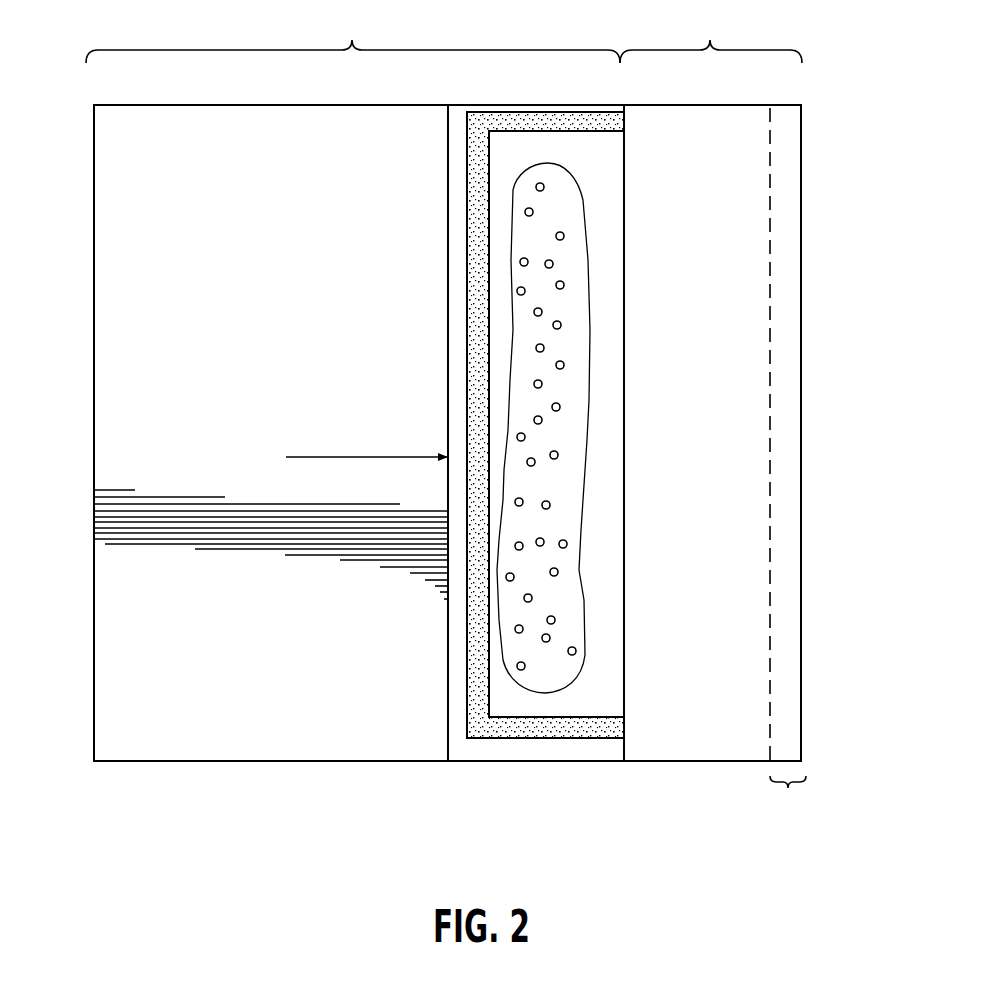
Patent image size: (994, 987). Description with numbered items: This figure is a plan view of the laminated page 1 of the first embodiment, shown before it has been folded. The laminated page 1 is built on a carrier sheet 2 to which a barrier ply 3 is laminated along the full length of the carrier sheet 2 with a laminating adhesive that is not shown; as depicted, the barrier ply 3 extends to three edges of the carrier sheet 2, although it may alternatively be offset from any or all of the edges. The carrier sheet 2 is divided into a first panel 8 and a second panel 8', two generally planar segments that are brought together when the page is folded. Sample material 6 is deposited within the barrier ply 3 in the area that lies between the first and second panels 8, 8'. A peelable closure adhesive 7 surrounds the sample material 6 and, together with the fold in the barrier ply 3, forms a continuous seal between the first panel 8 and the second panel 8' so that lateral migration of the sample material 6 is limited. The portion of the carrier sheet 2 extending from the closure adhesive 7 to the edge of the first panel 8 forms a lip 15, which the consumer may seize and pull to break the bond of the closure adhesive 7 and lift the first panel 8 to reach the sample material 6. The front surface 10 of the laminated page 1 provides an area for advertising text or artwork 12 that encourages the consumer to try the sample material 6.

The laminated page 1 is at (822, 204).
The carrier sheet 2 is at (130, 623).
The barrier ply 3 is at (750, 690).
The sample material 6 is at (553, 670).
The closure adhesive 7 is at (488, 724).
The first panel 8 is at (711, 35).
The second panel 8' is at (353, 35).
The front surface 10 is at (158, 178).
The advertising text or artwork 12 is at (274, 220).
The lip 15 is at (788, 798).